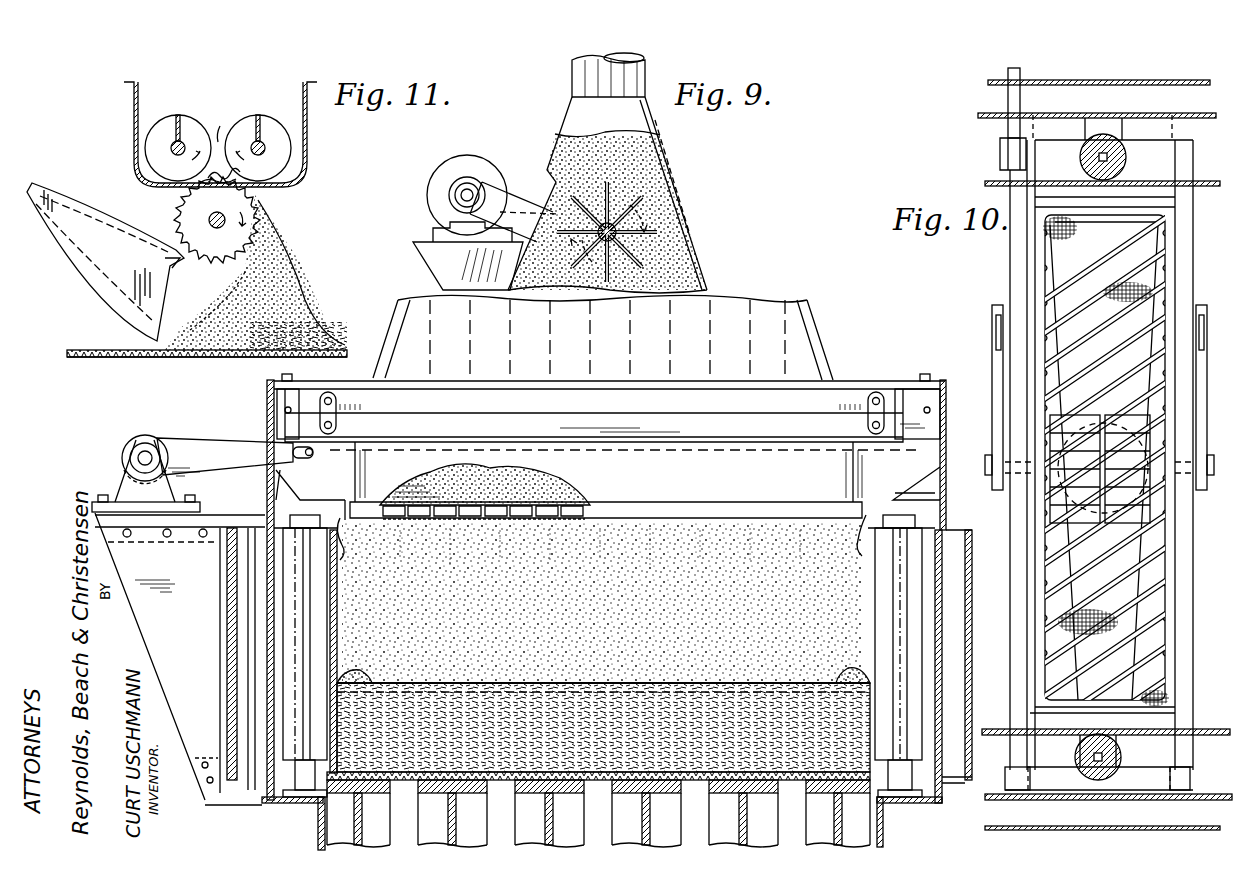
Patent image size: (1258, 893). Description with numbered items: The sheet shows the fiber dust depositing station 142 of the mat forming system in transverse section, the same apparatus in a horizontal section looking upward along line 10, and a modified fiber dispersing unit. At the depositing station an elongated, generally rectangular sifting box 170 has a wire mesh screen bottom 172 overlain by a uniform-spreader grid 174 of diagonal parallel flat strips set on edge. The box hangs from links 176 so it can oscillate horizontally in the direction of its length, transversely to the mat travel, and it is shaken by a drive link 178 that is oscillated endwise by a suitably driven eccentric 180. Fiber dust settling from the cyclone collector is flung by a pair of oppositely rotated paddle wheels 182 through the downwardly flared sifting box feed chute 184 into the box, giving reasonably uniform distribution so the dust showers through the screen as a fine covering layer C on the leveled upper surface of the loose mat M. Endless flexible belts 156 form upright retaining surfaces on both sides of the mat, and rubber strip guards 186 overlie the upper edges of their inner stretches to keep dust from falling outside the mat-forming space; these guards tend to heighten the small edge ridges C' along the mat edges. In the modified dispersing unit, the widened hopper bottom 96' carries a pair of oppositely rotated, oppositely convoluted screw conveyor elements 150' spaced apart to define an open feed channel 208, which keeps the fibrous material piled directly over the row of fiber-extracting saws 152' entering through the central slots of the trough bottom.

In FIG. 11, the screw conveyor elements 150' is at (218, 132).
In FIG. 11, the open feed channel 208 is at (224, 128).
In FIG. 11, the hopper trough bottom 96' is at (237, 134).
In FIG. 11, the fiber-extracting saws 152' is at (188, 220).
In FIG. 9, the paddle wheels 182 is at (642, 228).
In FIG. 10, the paddle wheels 182 is at (1100, 500).
In FIG. 9, the sifting box feed chute 184 is at (834, 318).
In FIG. 10, the sifting box feed chute 184 is at (1068, 268).
In FIG. 9, the links 176 is at (880, 395).
In FIG. 9, the sifting box 170 is at (860, 472).
In FIG. 9, the uniform-spreader grid 174 is at (575, 502).
In FIG. 10, the uniform-spreader grid 174 is at (1095, 348).
In FIG. 9, the wire mesh screen bottom 172 is at (570, 519).
In FIG. 10, the wire mesh screen bottom 172 is at (1125, 283).
In FIG. 9, the rubber strip guards 186 is at (340, 530).
In FIG. 9, the eccentric 180 is at (146, 438).
In FIG. 9, the drive link 178 is at (200, 440).
In FIG. 10, the drive link 178 is at (1007, 93).
In FIG. 9, the section line 10— 10 is at (214, 556).
In FIG. 9, the endless belts 156 is at (340, 606).
In FIG. 10, the endless belts 156 is at (1138, 84).
In FIG. 9, the edge ridges C' is at (603, 661).
In FIG. 9, the loose mat M is at (525, 692).
In FIG. 9, the covering layer C is at (603, 663).
In FIG. 9, the fiber dust depositing station 142 is at (610, 861).